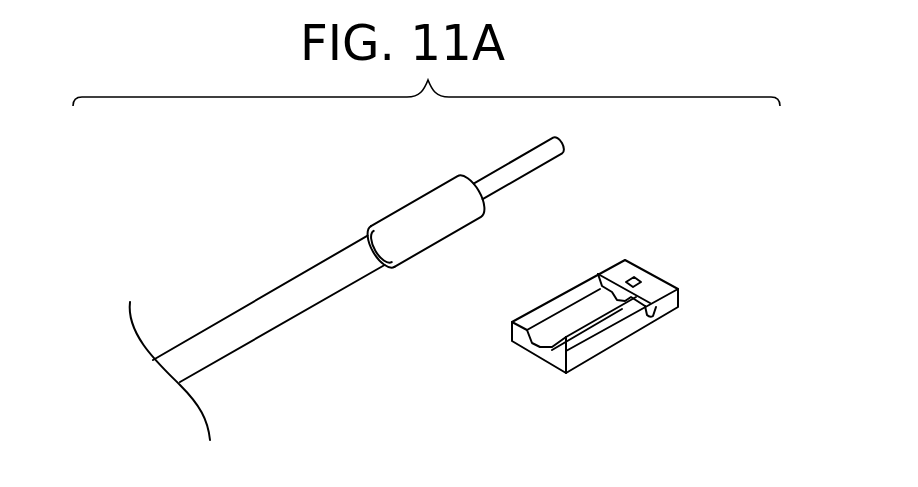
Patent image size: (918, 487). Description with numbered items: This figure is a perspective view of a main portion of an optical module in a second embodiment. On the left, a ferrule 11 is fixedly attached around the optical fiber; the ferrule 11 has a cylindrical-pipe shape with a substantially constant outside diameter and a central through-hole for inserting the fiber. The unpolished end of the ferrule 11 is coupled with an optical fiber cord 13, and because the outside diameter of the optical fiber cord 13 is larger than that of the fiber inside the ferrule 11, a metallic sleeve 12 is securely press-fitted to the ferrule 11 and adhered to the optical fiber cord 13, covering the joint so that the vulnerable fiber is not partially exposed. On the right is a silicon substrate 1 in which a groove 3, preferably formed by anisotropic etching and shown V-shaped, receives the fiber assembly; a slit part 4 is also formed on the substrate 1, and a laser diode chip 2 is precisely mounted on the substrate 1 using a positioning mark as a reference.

The silicon substrate 1 is at (628, 333).
The laser diode chip 2 is at (636, 283).
The groove 3 is at (572, 333).
The slit part 4 is at (657, 308).
The ferrule 11 is at (513, 165).
The metallic sleeve 12 is at (402, 212).
The optical fiber cord 13 is at (277, 292).